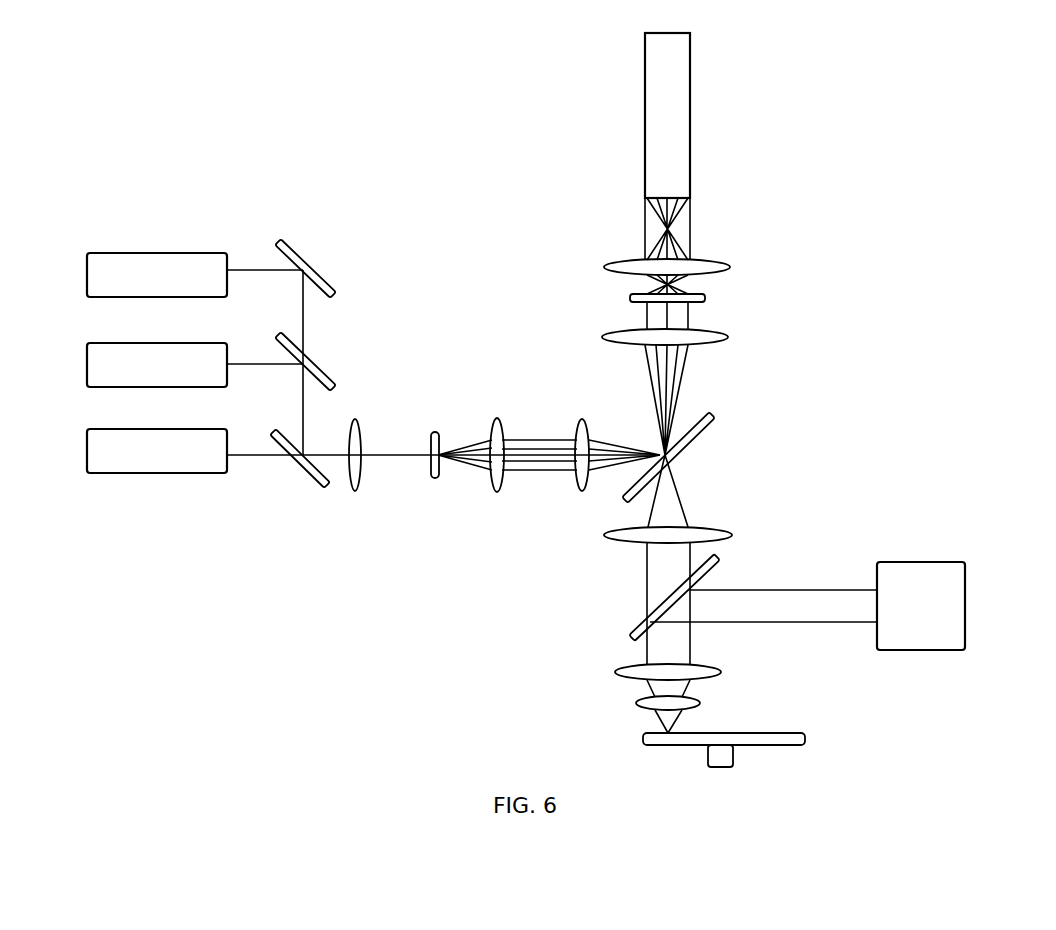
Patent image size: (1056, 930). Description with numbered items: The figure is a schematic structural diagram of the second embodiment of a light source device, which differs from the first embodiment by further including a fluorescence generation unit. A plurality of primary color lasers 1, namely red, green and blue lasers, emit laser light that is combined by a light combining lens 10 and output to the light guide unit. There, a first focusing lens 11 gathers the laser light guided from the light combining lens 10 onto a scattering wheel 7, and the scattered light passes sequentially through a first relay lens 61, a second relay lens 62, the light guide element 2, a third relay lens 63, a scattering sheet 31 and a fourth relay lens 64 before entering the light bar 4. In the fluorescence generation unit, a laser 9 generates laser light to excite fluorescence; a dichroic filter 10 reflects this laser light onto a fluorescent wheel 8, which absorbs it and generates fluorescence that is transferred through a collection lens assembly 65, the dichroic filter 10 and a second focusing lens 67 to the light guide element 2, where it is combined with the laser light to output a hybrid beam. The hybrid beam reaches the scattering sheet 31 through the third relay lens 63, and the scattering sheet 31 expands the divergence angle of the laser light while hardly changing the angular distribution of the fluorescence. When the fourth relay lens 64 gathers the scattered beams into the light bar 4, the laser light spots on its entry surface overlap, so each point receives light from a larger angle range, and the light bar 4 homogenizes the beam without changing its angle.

The primary color lasers 1 is at (83, 447).
The light combining lens 10 is at (293, 255).
The first focusing lens 11 is at (355, 497).
The scattering wheel 7 is at (430, 424).
The first relay lens 61 is at (492, 492).
The second relay lens 62 is at (575, 410).
The light guide element 2 is at (715, 433).
The light bar 4 is at (693, 117).
The fourth relay lens 64 is at (600, 266).
The scattering sheet 31 is at (712, 297).
The third relay lens 63 is at (735, 338).
The second focusing lens 67 is at (605, 538).
The collection lens assembly 65 is at (632, 703).
The fluorescent wheel 8 is at (800, 733).
The laser 9 is at (968, 600).